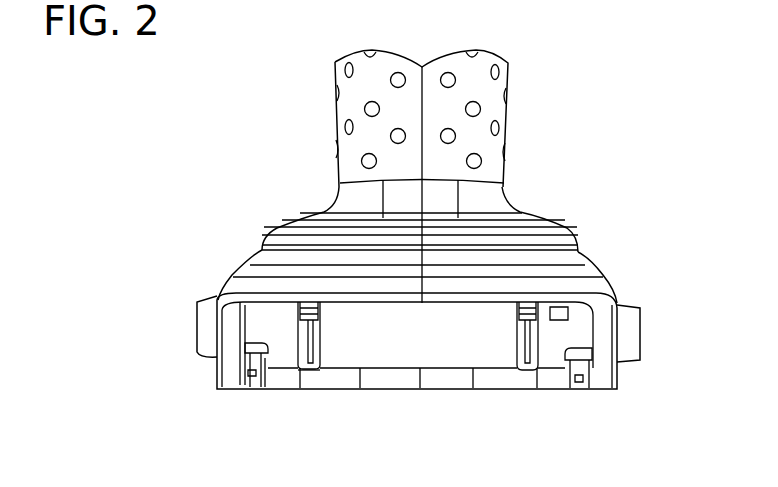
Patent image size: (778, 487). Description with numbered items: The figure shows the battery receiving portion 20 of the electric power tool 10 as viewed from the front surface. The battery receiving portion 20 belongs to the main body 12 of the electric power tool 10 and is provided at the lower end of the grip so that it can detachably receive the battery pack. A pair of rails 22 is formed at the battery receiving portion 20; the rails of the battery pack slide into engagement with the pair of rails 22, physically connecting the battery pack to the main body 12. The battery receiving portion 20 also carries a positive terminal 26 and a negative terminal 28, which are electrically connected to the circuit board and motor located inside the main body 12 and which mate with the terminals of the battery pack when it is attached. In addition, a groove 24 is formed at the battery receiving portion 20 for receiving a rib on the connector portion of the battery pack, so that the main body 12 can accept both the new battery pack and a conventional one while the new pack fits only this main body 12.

The electric power tool 10 is at (555, 27).
The main body 12 is at (497, 110).
The battery receiving portion 20 is at (600, 407).
The pair of rails 22 is at (266, 373).
The groove 24 is at (597, 337).
The positive terminal 26 is at (523, 358).
The negative terminal 28 is at (326, 358).